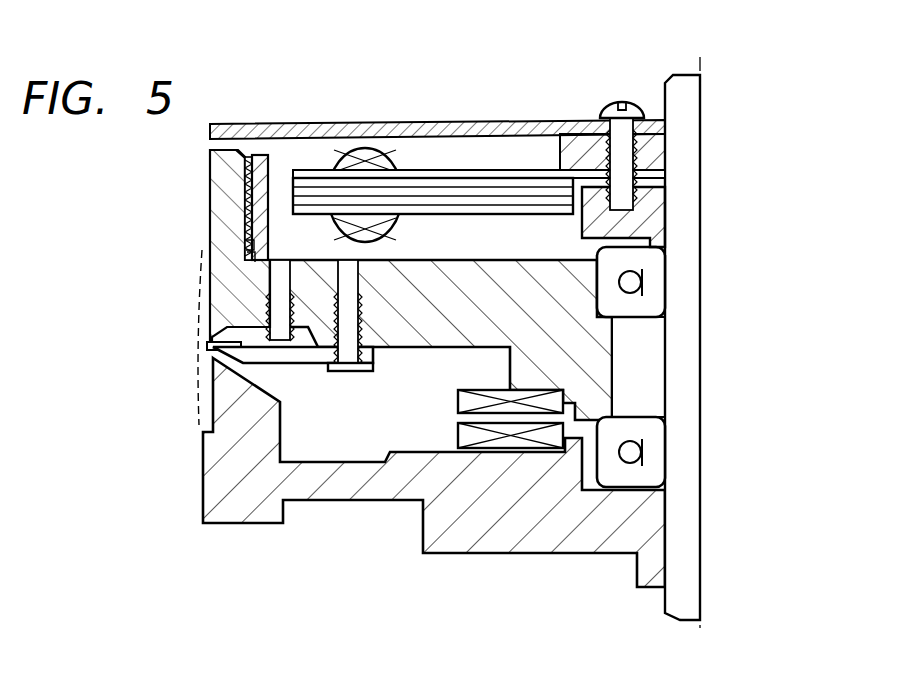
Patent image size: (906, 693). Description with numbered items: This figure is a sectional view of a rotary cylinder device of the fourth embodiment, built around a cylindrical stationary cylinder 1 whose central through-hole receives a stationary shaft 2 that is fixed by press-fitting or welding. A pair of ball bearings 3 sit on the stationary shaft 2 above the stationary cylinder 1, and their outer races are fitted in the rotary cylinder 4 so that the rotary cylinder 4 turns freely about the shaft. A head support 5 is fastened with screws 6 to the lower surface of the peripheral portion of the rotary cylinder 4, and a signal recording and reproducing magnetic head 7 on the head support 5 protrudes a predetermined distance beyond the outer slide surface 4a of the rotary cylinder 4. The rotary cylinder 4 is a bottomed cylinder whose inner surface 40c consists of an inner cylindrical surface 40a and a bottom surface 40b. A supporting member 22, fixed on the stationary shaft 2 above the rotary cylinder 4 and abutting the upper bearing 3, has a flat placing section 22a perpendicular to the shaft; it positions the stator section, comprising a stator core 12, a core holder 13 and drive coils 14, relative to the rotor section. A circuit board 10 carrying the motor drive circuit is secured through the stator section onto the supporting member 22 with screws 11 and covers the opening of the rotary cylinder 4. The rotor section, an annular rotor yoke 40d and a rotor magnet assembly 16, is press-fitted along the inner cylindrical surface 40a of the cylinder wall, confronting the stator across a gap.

The stationary cylinder 1 is at (205, 500).
The stationary shaft 2 is at (690, 509).
The ball bearings 3 is at (657, 275).
The rotary cylinder 4 is at (235, 195).
The outer cylindrical surface (slide surface) 4a is at (216, 172).
The head support 5 is at (302, 357).
The screws 6 is at (337, 372).
The magnetic head 7 is at (207, 347).
The circuit board 10 is at (480, 122).
The screws 11 is at (607, 104).
The stator core 12 is at (503, 168).
The core holder 13 is at (655, 132).
The drive coils 14 is at (385, 153).
The rotor magnet assembly 16 is at (252, 156).
The supporting member 22 is at (663, 217).
The placing section 22a is at (663, 170).
The inner cylindrical surface 40a is at (253, 243).
The bottom surface 40b is at (257, 282).
The inner surface 40c is at (160, 243).
The rotor yoke 40d is at (245, 220).